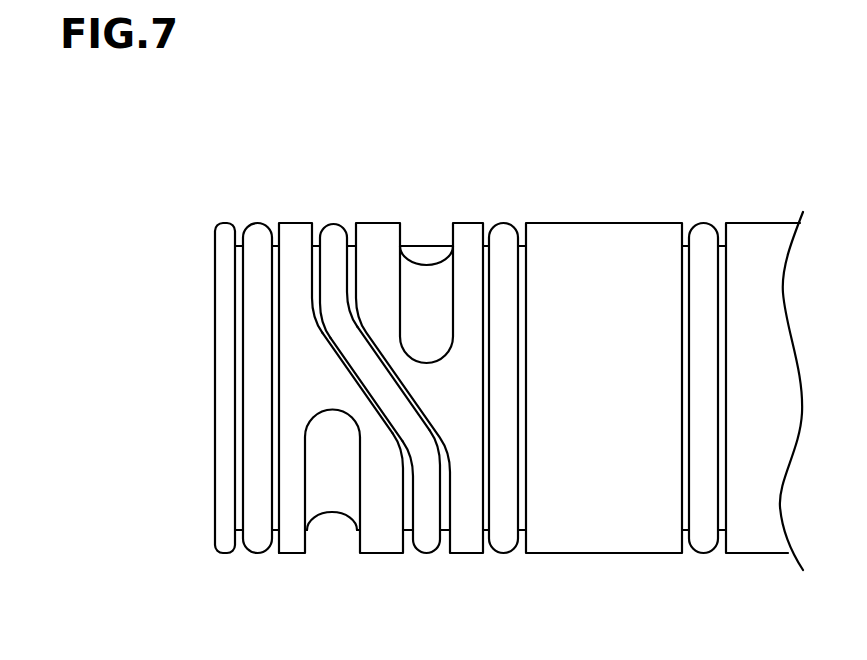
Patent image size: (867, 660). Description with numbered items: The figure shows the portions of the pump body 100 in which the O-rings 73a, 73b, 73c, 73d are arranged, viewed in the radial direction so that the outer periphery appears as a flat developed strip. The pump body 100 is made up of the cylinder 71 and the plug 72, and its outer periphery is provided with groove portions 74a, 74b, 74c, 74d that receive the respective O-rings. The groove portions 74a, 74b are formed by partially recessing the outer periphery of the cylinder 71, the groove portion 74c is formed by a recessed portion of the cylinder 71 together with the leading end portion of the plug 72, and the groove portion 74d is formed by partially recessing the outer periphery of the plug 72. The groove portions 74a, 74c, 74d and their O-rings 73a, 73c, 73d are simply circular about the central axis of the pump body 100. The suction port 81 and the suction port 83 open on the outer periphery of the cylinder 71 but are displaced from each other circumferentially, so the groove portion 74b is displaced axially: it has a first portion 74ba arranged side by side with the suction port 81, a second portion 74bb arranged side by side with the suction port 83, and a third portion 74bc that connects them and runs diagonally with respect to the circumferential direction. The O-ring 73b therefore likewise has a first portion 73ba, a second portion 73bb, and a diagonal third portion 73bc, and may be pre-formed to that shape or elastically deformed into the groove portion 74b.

The pump body 100 is at (207, 412).
The cylinder 71 is at (225, 555).
The plug 72 is at (592, 555).
The O-ring 73a is at (257, 297).
The O-ring 73b is at (331, 296).
The first portion 73ba is at (423, 503).
The second portion 73bb is at (335, 256).
The third portion 73bc is at (373, 380).
The O-ring 73c is at (503, 293).
The O-ring 73d is at (702, 295).
The groove portion 74a is at (240, 273).
The groove portion 74b is at (320, 340).
The first portion 74ba is at (402, 490).
The second portion 74bb is at (314, 272).
The third portion 74bc is at (338, 372).
The groove portion 74c is at (485, 272).
The groove portion 74d is at (682, 272).
The suction port 81 is at (332, 532).
The suction port 83 is at (425, 246).